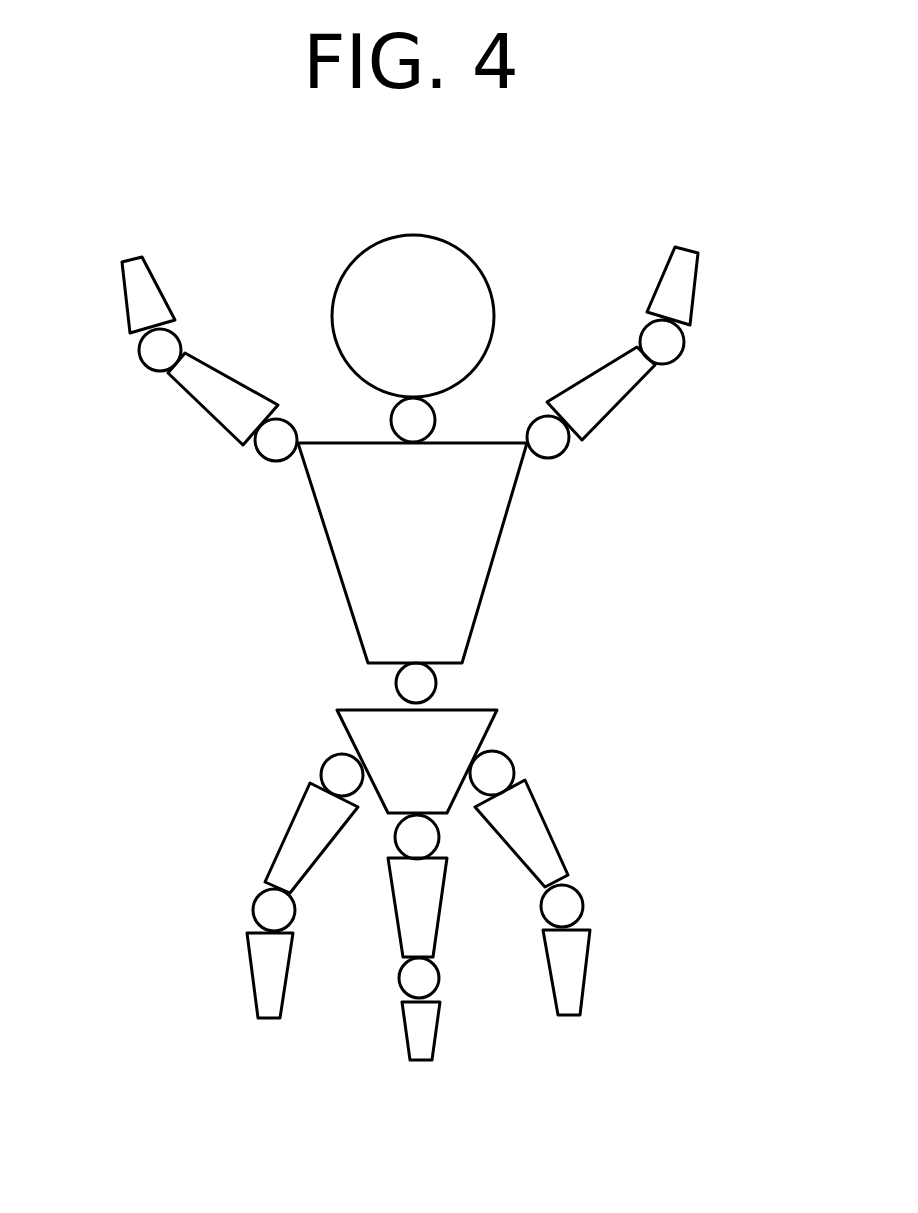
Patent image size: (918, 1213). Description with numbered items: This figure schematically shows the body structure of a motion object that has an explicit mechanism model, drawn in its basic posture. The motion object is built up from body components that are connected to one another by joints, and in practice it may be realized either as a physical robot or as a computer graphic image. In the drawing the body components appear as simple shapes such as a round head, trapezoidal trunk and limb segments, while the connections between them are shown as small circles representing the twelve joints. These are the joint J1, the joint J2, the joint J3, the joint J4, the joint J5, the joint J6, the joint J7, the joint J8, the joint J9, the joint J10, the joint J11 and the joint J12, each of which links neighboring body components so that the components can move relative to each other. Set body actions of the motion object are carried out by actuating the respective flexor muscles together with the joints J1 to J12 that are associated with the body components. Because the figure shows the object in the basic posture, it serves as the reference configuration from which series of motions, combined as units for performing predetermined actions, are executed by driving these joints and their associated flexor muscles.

The joint J1 is at (424, 421).
The joint J2 is at (273, 446).
The joint J3 is at (156, 349).
The joint J4 is at (552, 442).
The joint J5 is at (666, 341).
The joint J6 is at (427, 685).
The joint J7 is at (430, 833).
The joint J8 is at (415, 975).
The joint J9 is at (330, 768).
The joint J10 is at (270, 912).
The joint J11 is at (498, 772).
The joint J12 is at (563, 907).